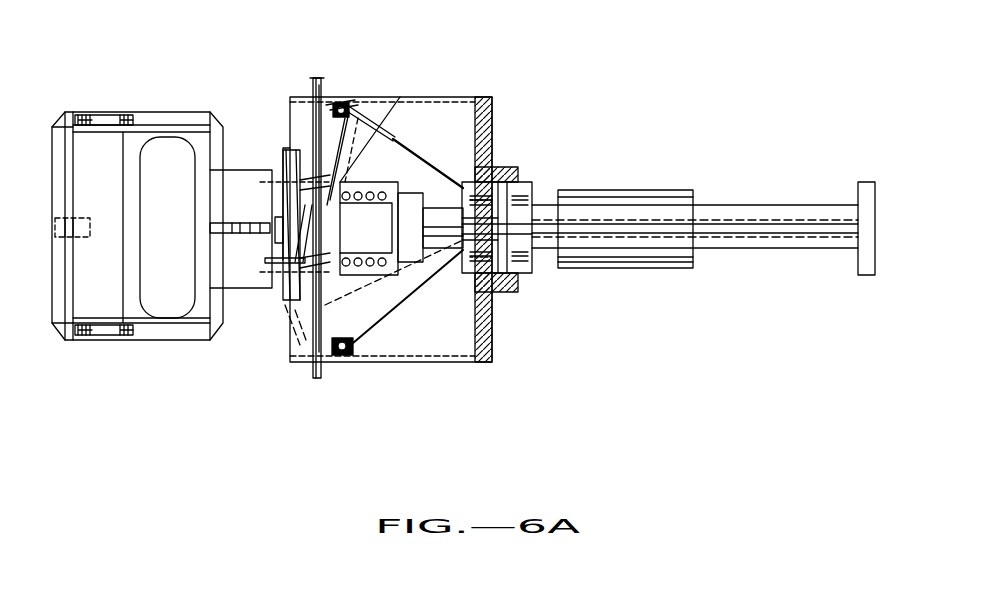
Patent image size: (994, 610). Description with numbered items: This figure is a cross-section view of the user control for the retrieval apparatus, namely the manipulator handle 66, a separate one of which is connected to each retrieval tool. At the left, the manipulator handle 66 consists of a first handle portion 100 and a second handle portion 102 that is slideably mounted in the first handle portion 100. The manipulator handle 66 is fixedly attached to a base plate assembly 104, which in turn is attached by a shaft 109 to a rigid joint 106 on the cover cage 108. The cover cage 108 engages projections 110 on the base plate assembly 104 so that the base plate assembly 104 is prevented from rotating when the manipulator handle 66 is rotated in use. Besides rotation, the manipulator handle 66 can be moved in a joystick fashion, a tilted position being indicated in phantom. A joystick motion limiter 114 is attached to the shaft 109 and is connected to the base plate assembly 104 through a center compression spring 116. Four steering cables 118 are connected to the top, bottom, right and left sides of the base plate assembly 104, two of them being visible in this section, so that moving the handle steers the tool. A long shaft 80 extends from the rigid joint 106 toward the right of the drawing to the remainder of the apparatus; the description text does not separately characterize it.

The manipulator handle 66 is at (150, 420).
The drive shaft 80 is at (778, 247).
The first handle portion 100 is at (66, 283).
The second handle portion 102 is at (133, 263).
The base plate assembly 104 is at (323, 132).
The rigid joint 106 is at (532, 182).
The cover cage 108 is at (493, 334).
The shaft 109 is at (445, 198).
The projections 110 is at (314, 378).
The joystick motion limiter 114 is at (350, 185).
The center compression spring 116 is at (365, 361).
The steering cables 118 is at (400, 142).